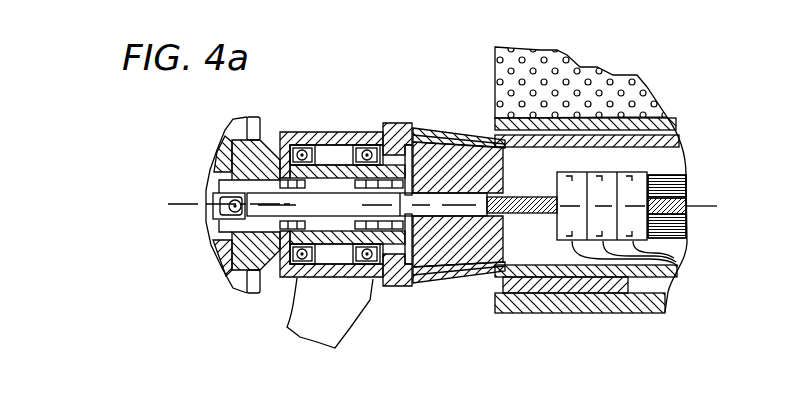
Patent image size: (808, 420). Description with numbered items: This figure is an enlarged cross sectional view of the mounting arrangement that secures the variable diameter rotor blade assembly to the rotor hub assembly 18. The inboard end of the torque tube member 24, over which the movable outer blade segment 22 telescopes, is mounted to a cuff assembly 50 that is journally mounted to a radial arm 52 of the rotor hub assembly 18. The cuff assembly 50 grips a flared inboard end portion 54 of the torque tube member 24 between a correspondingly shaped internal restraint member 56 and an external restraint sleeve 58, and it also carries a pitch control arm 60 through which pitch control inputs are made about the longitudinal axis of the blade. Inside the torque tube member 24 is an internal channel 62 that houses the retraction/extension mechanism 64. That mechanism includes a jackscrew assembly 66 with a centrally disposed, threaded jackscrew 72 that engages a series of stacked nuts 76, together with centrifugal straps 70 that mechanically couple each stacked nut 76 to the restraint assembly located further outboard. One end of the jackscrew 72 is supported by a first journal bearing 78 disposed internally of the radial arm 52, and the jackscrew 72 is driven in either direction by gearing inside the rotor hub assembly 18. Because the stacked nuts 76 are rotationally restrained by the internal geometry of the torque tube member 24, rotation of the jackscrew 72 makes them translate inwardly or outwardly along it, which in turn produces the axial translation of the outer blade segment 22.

The rotor hub assembly 18 is at (221, 162).
The movable outer blade segment 22 is at (624, 77).
The torque tube member 24 is at (672, 137).
The cuff assembly 50 is at (376, 191).
The radial arm 52 is at (337, 170).
The flared inboard end portion 54 is at (450, 125).
The internal restraint member 56 is at (455, 253).
The external restraint sleeve 58 is at (434, 278).
The pitch control arm 60 is at (343, 314).
The internal channel 62 is at (598, 260).
The retraction/extension mechanism 64 is at (686, 249).
The jackscrew assembly 66 is at (550, 225).
The centrifugal straps 70 is at (675, 175).
The jackscrew 72 is at (687, 202).
The stacked nuts 76 is at (680, 250).
The first journal bearing 78 is at (363, 217).